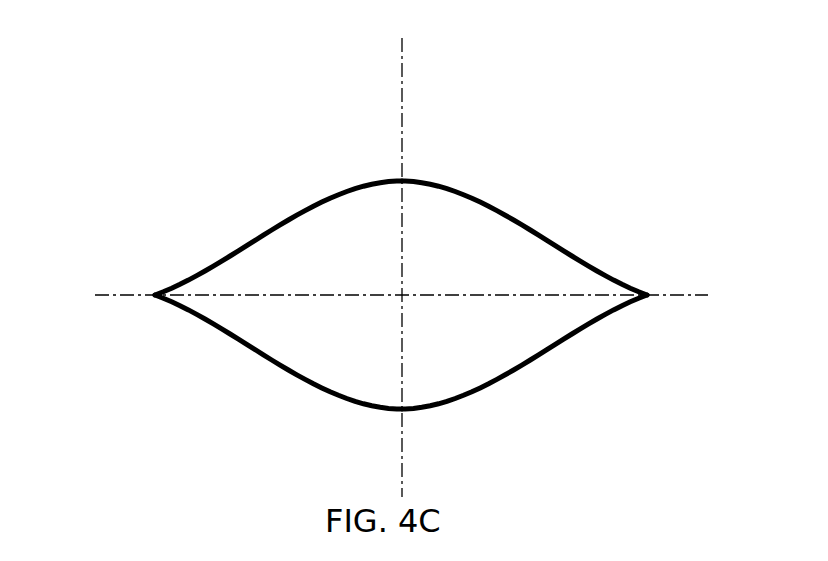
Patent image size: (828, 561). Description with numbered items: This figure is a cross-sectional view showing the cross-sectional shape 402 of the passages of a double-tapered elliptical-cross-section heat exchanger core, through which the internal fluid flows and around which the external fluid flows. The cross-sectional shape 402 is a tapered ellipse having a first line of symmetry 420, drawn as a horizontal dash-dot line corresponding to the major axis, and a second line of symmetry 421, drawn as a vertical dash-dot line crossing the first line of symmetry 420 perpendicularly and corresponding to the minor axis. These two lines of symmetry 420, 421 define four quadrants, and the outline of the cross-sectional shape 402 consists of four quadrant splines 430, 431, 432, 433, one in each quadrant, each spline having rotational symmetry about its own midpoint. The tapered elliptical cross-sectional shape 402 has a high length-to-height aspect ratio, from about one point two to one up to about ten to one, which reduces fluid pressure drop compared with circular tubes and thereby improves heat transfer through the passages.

The cross-sectional shape 402 is at (458, 291).
The first line of symmetry 420 is at (127, 297).
The second line of symmetry 421 is at (402, 85).
The spline 430 is at (307, 203).
The spline 431 is at (497, 203).
The spline 432 is at (513, 378).
The spline 433 is at (290, 378).